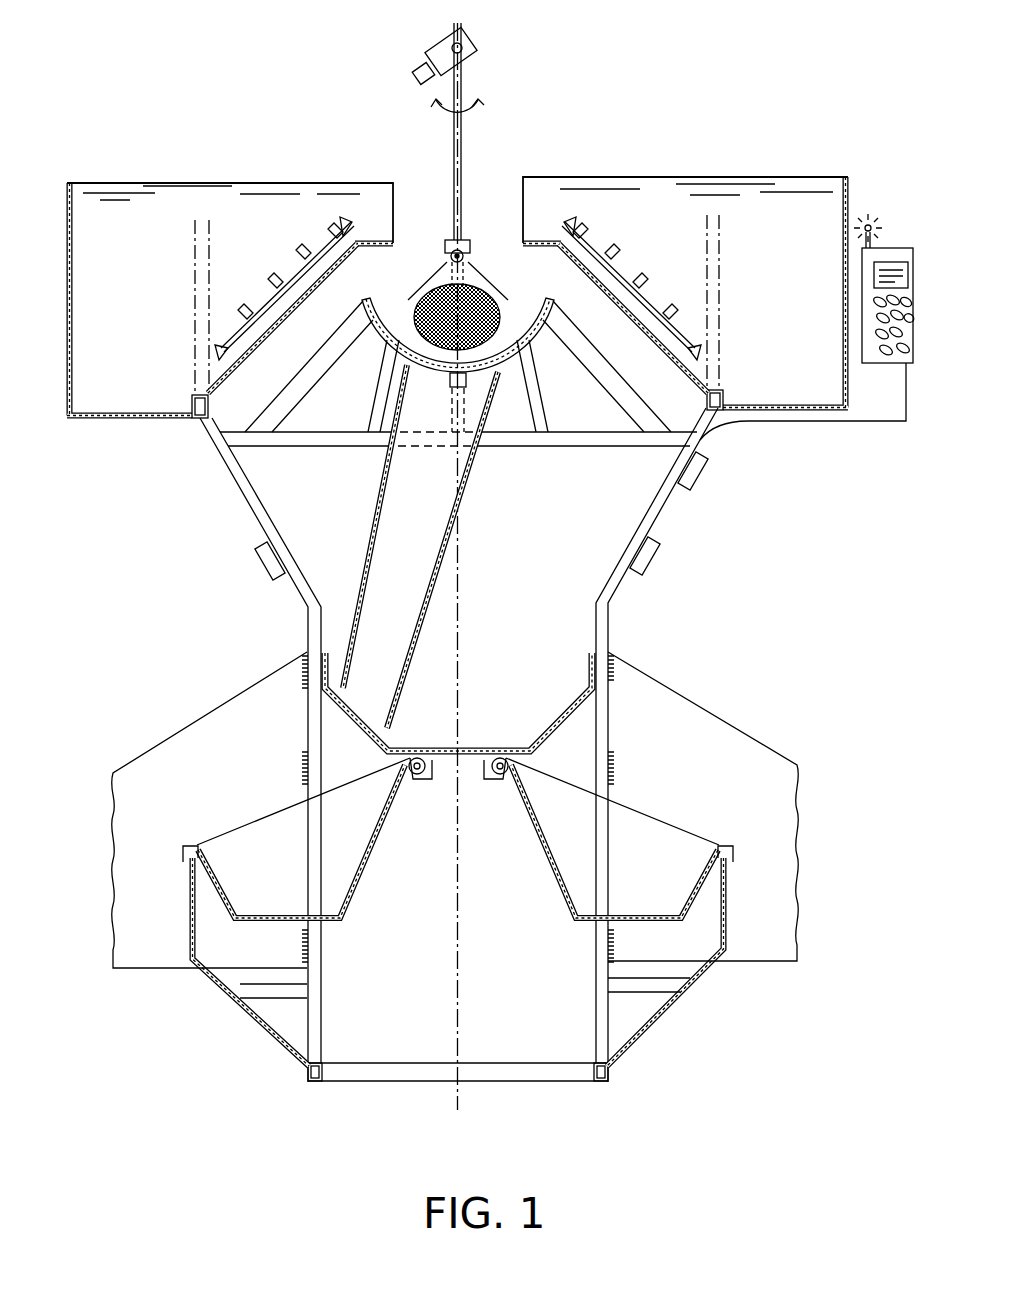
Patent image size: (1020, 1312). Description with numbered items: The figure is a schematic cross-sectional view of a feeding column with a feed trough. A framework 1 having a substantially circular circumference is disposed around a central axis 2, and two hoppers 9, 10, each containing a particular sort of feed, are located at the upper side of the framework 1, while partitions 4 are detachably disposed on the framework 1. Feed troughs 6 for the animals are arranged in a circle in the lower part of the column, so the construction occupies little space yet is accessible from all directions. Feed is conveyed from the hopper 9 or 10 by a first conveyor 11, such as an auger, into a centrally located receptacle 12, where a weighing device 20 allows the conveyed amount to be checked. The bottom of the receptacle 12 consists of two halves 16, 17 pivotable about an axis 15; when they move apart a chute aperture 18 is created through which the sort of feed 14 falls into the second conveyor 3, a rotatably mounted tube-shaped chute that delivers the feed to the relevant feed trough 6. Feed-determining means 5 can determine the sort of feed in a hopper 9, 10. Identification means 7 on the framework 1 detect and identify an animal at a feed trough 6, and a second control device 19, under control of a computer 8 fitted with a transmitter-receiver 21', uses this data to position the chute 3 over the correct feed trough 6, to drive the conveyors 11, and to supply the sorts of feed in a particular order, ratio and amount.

The framework 1 is at (593, 958).
The central axis 2 is at (468, 1028).
The second conveyor 3 is at (461, 484).
The partitions 4 is at (201, 742).
The feed-determining means 5 is at (467, 42).
The feed troughs 6 is at (258, 835).
The identification means 7 is at (273, 570).
The computer 8 is at (903, 364).
The hopper 9 is at (262, 197).
The hopper 10 is at (655, 192).
The first conveyor 11 is at (306, 258).
The receptacle 12 is at (538, 343).
The sort of feed 14 is at (470, 262).
The axis 15 is at (462, 240).
The bottom half 16 is at (413, 305).
The bottom half 17 is at (503, 305).
The chute aperture 18 is at (481, 374).
The second control device 19 is at (694, 472).
The weighing device 20 is at (449, 240).
The transmitter-receiver 21' is at (885, 207).